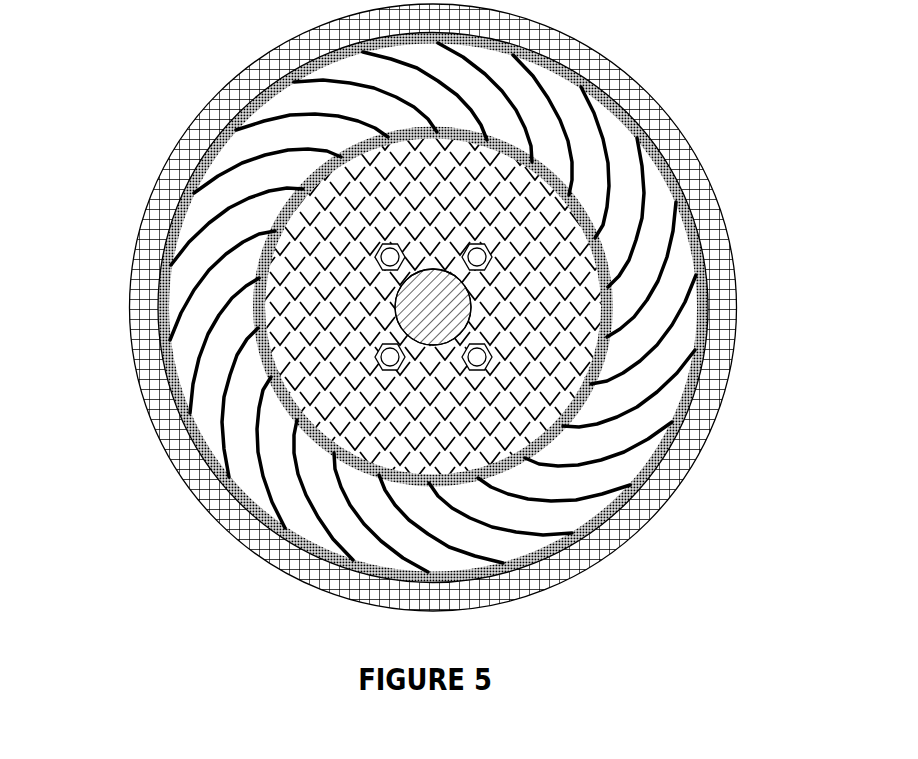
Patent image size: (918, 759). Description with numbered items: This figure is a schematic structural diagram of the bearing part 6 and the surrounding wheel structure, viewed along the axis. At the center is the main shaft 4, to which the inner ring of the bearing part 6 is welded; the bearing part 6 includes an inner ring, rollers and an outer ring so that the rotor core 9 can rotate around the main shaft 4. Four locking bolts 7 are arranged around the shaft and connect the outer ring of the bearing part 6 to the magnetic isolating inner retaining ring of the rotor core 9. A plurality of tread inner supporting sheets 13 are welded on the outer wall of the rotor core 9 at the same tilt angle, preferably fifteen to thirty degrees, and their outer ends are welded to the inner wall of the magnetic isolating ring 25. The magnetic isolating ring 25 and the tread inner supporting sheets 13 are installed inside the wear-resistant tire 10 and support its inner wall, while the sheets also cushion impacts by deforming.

The wear-resistant tire 10 is at (207, 121).
The magnetic isolating ring 25 is at (166, 236).
The tread inner supporting sheet 13 is at (195, 378).
The rotor core 9 is at (290, 398).
The bearing part 6 is at (500, 240).
The main shaft 4 is at (460, 297).
The locking bolt 7 is at (485, 363).